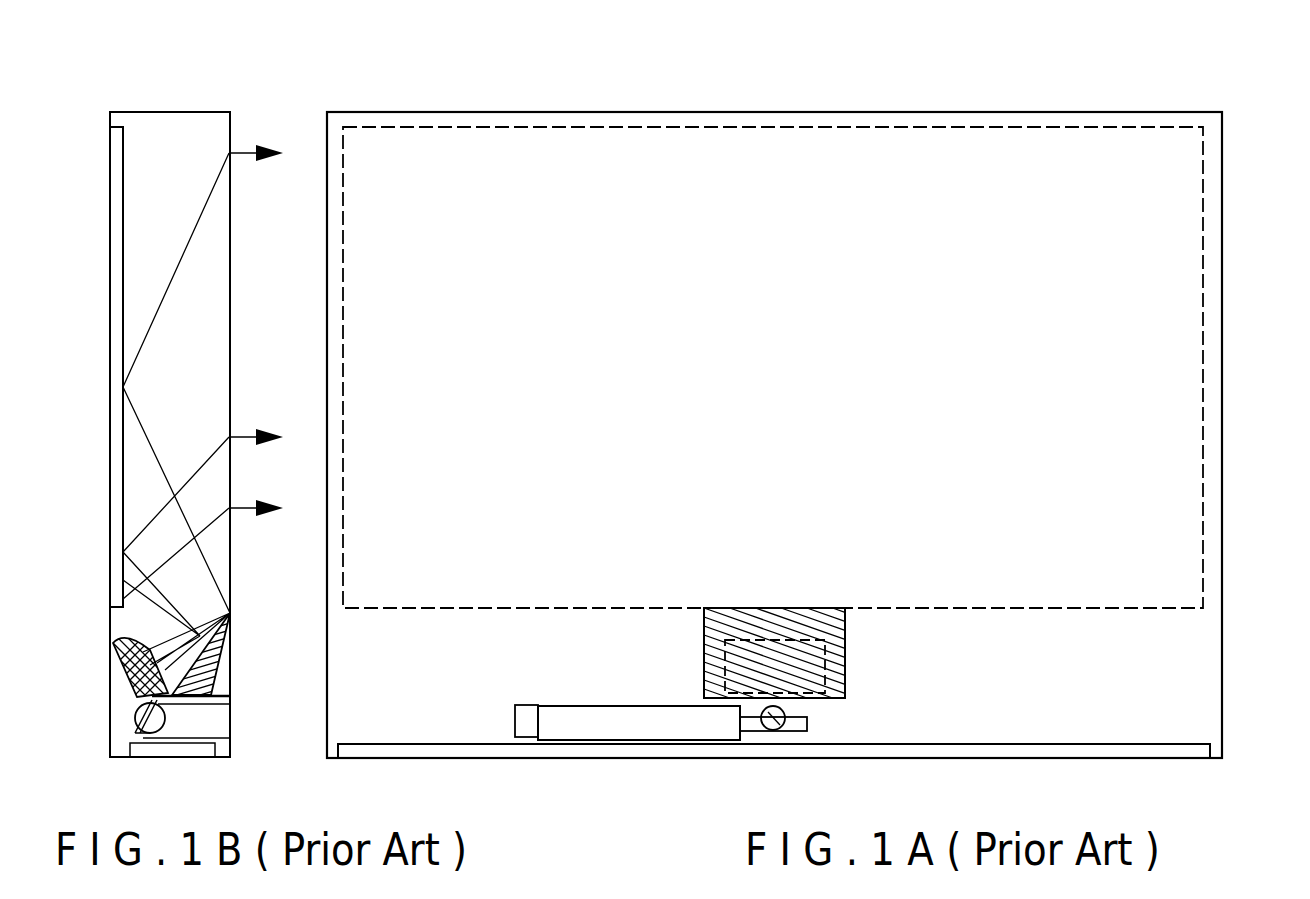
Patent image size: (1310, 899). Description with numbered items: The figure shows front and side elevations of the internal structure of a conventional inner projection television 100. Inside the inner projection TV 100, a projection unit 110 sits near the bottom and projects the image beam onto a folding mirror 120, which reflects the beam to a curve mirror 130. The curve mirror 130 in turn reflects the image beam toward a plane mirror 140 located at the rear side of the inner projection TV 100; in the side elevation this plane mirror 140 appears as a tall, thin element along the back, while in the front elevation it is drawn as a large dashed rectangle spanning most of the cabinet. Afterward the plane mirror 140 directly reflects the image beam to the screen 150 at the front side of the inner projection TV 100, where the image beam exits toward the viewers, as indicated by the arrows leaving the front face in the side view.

In FIG. 1B, the inner projection television 100 is at (154, 82).
In FIG. 1B, the projection unit 110 is at (140, 722).
In FIG. 1A, the projection unit 110 is at (777, 722).
In FIG. 1B, the folding mirror 120 is at (112, 652).
In FIG. 1A, the folding mirror 120 is at (832, 692).
In FIG. 1B, the curve mirror 130 is at (208, 668).
In FIG. 1A, the curve mirror 130 is at (845, 673).
In FIG. 1B, the plane mirror 140 is at (117, 437).
In FIG. 1A, the plane mirror 140 is at (540, 127).
In FIG. 1B, the screen 150 is at (233, 296).
In FIG. 1A, the screen 150 is at (1212, 294).